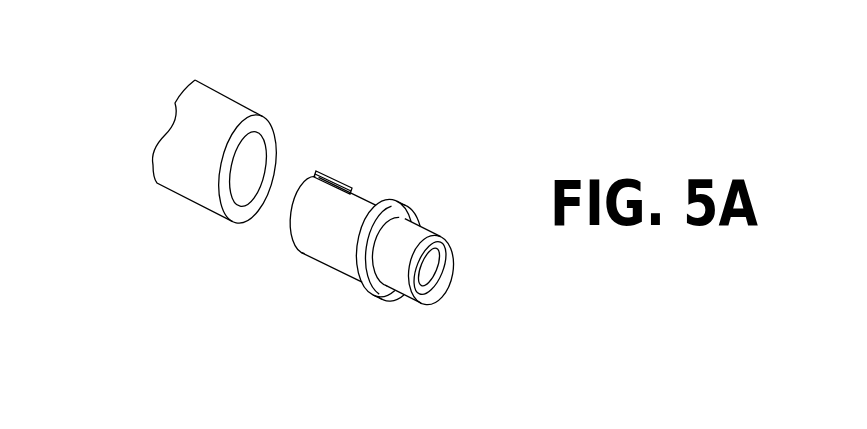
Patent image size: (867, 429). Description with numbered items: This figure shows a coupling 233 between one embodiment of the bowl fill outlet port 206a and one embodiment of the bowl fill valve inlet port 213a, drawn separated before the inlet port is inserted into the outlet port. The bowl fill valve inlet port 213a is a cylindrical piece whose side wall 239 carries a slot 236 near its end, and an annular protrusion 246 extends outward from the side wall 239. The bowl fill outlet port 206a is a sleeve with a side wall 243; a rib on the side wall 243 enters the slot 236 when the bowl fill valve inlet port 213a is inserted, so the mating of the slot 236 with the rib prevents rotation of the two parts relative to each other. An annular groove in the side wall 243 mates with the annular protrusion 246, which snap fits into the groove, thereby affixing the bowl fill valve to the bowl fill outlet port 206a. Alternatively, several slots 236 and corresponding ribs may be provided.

The bowl fill outlet port 206a is at (250, 79).
The side wall 243 is at (253, 155).
The bowl fill valve inlet port 213a is at (382, 207).
The slot 236 is at (336, 187).
The side wall 239 is at (330, 233).
The annular protrusion 246 is at (370, 282).
The coupling 233 is at (177, 327).